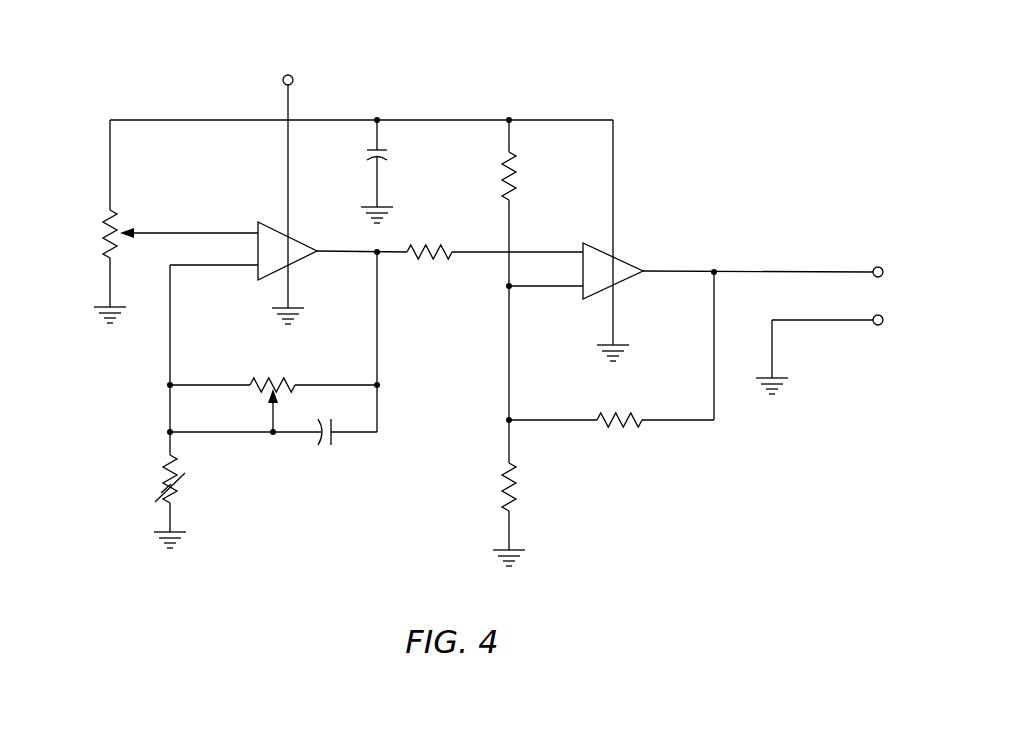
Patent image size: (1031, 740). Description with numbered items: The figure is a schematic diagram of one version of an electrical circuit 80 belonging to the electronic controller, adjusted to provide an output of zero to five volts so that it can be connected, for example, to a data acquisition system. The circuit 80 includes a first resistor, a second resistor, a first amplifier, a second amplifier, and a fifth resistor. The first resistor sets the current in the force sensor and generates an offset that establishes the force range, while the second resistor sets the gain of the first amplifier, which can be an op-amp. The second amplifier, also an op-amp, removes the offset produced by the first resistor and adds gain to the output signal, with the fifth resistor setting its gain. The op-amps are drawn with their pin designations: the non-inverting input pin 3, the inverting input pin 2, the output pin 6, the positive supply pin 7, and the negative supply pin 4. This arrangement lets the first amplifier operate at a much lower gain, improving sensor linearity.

The electrical circuit 80 is at (537, 300).
The op amp non-inverting input pin 3 is at (351, 233).
The op amp inverting input pin 2 is at (376, 325).
The op amp output pin 6 is at (595, 250).
The op amp positive supply pin 7 is at (438, 171).
The op amp negative supply pin 4 is at (446, 298).